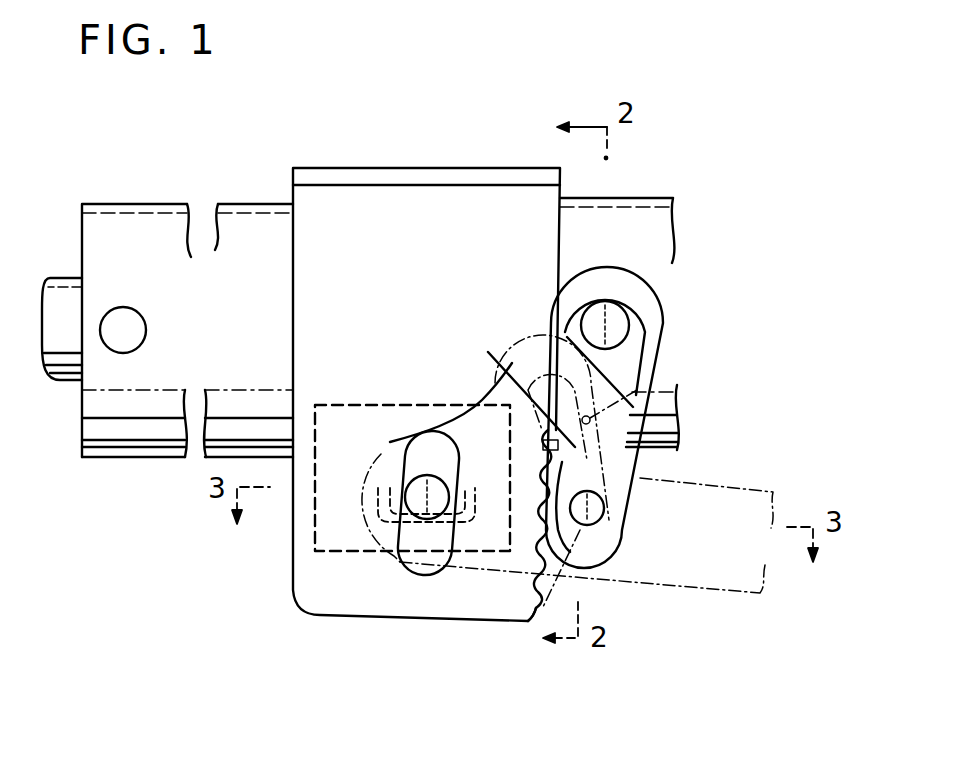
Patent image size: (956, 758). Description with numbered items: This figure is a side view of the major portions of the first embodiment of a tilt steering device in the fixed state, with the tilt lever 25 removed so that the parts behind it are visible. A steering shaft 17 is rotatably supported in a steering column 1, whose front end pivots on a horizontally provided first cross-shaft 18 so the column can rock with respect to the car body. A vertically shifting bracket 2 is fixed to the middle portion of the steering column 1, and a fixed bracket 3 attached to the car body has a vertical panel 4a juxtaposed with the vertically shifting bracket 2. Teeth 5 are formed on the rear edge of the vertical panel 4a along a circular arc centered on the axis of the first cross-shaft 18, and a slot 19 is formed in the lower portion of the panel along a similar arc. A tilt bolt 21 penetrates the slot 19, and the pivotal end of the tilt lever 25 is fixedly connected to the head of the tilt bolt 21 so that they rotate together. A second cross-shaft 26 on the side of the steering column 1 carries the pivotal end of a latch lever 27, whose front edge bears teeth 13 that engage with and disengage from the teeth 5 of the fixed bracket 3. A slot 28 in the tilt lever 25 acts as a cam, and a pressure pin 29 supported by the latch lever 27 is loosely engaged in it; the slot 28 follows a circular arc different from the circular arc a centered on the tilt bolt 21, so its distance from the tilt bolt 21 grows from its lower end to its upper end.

The steering column 1 is at (236, 225).
The vertically shifting bracket 2 is at (327, 528).
The fixed bracket 3 is at (383, 205).
The vertical panel 4a is at (480, 205).
The teeth 5 is at (538, 610).
The teeth 13 is at (533, 530).
The steering shaft 17 is at (58, 295).
The first cross-shaft 18 is at (118, 335).
The slot 19 is at (423, 572).
The tilt bolt 21 is at (427, 480).
The tilt lever 25 is at (732, 502).
The second cross-shaft 26 is at (620, 323).
The latch lever 27 is at (625, 365).
The slot 28 is at (632, 392).
The pressure pin 29 is at (603, 505).
The circular arc a is at (580, 532).